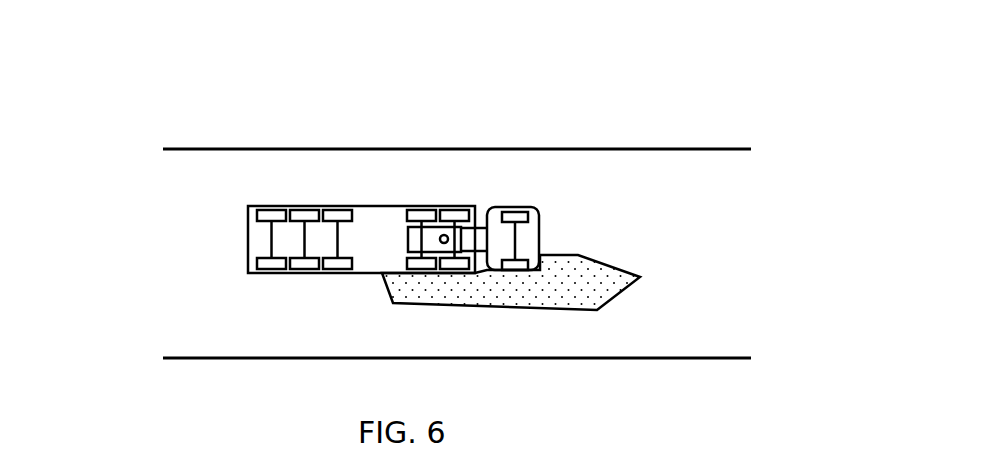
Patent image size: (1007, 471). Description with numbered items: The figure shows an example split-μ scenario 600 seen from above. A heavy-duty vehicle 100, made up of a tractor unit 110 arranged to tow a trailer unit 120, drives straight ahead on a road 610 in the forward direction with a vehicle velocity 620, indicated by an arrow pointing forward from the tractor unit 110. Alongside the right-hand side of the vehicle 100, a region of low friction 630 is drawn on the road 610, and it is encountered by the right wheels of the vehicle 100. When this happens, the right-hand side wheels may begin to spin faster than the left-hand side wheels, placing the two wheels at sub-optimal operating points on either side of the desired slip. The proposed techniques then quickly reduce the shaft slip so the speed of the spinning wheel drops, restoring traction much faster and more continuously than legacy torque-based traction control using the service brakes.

The split-μ scenario 600 is at (116, 71).
The heavy-duty vehicle 100 is at (430, 166).
The tractor unit 110 is at (490, 208).
The trailer unit 120 is at (300, 274).
The road 610 is at (553, 148).
The vehicle velocity 620 is at (540, 241).
The region of low friction 630 is at (641, 277).